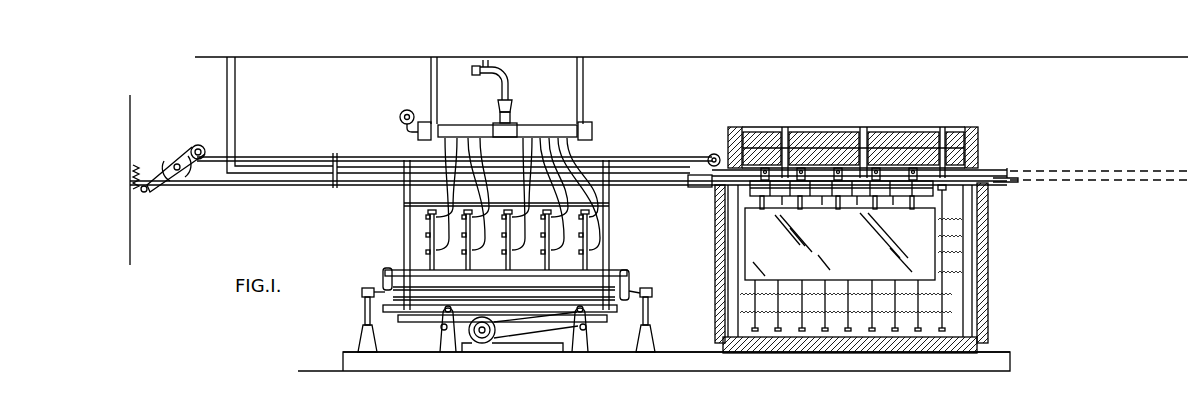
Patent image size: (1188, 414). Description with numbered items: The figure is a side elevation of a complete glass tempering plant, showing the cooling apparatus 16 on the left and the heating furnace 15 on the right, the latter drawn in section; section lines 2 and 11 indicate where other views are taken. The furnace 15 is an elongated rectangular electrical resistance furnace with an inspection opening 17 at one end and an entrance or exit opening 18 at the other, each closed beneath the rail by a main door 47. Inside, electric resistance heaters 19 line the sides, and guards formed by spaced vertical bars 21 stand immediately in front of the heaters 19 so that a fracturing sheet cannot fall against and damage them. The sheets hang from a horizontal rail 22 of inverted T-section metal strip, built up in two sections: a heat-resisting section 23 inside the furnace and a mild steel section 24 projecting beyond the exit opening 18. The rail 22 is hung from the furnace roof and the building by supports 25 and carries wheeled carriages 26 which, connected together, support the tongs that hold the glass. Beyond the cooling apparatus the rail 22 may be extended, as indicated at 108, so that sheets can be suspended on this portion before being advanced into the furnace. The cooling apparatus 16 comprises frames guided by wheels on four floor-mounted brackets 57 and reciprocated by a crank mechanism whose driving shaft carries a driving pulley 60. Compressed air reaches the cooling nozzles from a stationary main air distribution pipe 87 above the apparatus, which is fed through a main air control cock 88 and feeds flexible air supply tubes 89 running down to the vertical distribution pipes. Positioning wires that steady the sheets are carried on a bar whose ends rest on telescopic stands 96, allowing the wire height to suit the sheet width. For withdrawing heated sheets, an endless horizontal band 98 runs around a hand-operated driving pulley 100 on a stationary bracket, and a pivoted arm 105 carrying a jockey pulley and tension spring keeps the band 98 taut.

The section line 2- 2 is at (387, 226).
The section line 11- 11 is at (700, 86).
The furnace 15 is at (838, 287).
The cooling apparatus 16 is at (609, 207).
The inspection opening 17 is at (972, 245).
The entrance or exit opening 18 is at (733, 248).
The electric resistance heaters 19 is at (954, 303).
The spaced vertical bars 21 is at (798, 280).
The horizontal rail 22 is at (352, 167).
The rail section 23 is at (896, 170).
The rail section 24 is at (638, 167).
The supports 25 is at (235, 113).
The carriages 26 is at (812, 188).
The main door 47 is at (713, 300).
The brackets 57 is at (440, 337).
The driving pulley 60 is at (492, 348).
The main air distribution pipe 87 is at (542, 128).
The main air control cock 88 is at (500, 108).
The flexible air supply tubes 89 is at (443, 147).
The telescopic stand 96 is at (366, 318).
The endless horizontal band 98 is at (277, 187).
The driving pulley 100 is at (177, 151).
The arm 105 is at (160, 187).
The rail extension 108 is at (1093, 179).